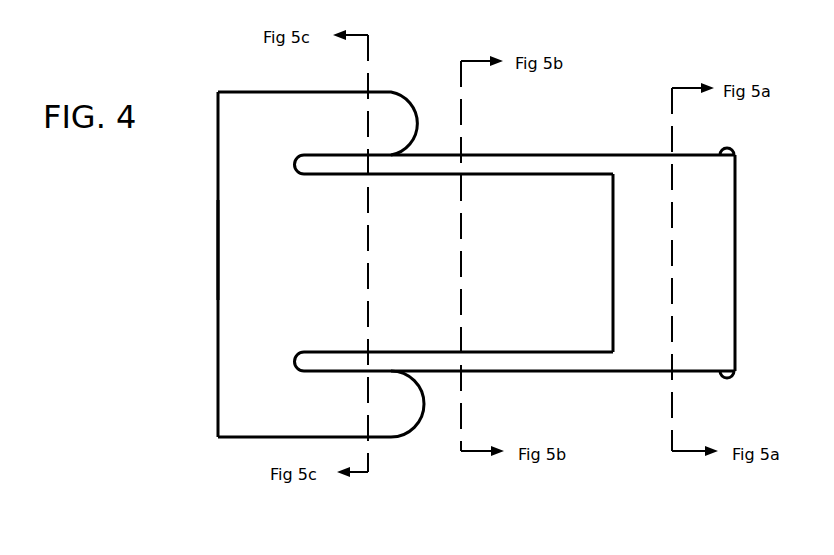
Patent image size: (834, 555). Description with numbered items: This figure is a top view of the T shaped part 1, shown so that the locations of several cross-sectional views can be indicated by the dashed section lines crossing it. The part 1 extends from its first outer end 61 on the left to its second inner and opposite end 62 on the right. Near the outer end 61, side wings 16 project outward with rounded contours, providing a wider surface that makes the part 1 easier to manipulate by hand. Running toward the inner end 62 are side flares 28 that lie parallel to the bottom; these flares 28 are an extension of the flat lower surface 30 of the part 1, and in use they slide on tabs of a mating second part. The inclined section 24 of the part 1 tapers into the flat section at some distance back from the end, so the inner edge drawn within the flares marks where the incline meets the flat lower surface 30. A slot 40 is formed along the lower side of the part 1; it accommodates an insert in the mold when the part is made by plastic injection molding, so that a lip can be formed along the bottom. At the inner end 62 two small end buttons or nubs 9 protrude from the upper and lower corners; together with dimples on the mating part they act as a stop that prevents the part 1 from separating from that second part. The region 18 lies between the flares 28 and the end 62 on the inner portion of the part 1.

The T shaped part 1 is at (248, 268).
The side wings 16 is at (330, 113).
The first outer end 61 is at (218, 199).
The second inner end 62 is at (737, 205).
The side flares 28 is at (534, 166).
The slot 40 is at (327, 362).
The inclined section 24 is at (598, 250).
The end buttons or nubs 9 is at (733, 148).
The flat lower surface 30 is at (722, 278).
The contact portion 18 is at (712, 317).